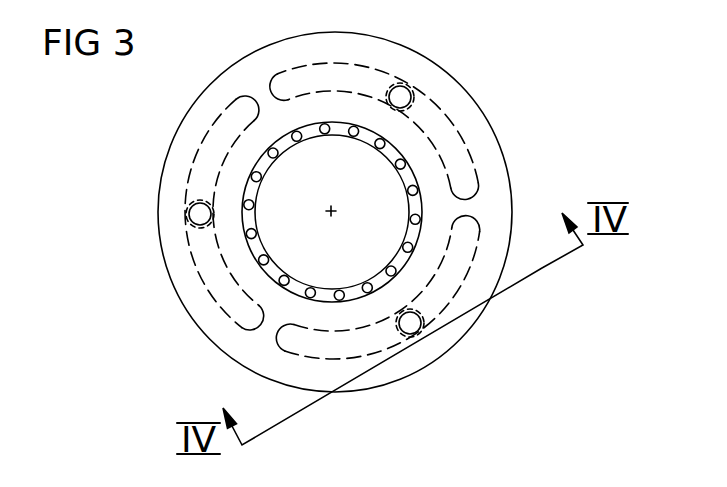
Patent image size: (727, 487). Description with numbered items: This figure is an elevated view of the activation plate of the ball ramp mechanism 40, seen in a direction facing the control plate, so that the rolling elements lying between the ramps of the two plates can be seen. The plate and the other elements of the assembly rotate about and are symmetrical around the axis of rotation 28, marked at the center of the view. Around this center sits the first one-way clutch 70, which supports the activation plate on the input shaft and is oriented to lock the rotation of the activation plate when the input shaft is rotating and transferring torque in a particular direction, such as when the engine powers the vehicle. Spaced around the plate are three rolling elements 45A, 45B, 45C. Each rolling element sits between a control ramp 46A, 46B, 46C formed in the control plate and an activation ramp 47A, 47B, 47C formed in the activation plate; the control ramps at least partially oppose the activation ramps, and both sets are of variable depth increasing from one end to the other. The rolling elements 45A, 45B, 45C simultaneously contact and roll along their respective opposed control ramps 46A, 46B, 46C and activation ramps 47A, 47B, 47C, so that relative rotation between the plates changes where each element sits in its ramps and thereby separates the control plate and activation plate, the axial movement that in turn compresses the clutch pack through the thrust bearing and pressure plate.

The ball ramp mechanism 40 is at (410, 62).
The first one-way clutch 70 is at (392, 131).
The axis of rotation 28 is at (330, 209).
The rolling element 45A is at (422, 100).
The rolling element 45B is at (414, 304).
The rolling element 45C is at (190, 216).
The control ramp 46A is at (470, 157).
The control ramp 46B is at (300, 357).
The control ramp 46C is at (232, 108).
The activation ramp 47A is at (302, 60).
The activation ramp 47B is at (482, 230).
The activation ramp 47C is at (196, 261).